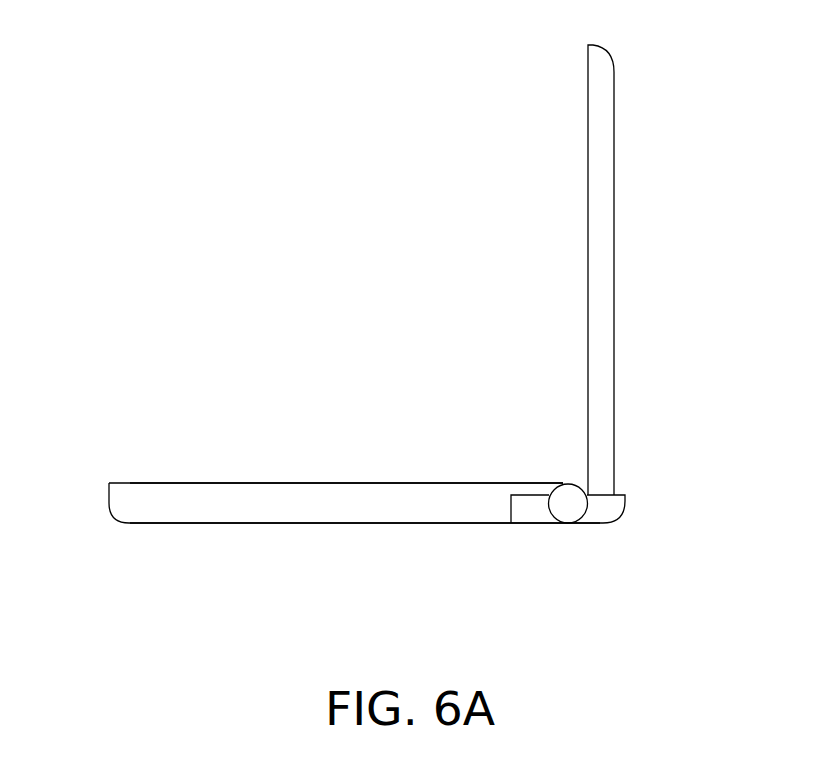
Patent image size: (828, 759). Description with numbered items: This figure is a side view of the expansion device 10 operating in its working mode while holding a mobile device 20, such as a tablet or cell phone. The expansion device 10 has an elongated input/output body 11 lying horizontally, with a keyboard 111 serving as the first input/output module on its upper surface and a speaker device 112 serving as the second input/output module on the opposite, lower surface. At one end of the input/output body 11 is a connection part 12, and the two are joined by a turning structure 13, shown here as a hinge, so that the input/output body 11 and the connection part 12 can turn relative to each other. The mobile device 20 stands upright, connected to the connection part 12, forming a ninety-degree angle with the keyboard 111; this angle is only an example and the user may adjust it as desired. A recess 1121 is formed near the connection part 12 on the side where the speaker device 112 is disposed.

The expansion device 10 is at (157, 579).
The input/output body 11 is at (109, 500).
The keyboard 111 is at (338, 483).
The speaker device 112 is at (289, 523).
The recess 1121 is at (533, 509).
The connection part 12 is at (604, 512).
The turning structure 13 is at (572, 516).
The mobile device 20 is at (607, 334).